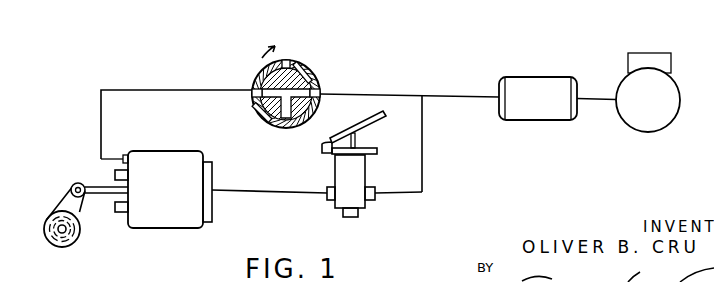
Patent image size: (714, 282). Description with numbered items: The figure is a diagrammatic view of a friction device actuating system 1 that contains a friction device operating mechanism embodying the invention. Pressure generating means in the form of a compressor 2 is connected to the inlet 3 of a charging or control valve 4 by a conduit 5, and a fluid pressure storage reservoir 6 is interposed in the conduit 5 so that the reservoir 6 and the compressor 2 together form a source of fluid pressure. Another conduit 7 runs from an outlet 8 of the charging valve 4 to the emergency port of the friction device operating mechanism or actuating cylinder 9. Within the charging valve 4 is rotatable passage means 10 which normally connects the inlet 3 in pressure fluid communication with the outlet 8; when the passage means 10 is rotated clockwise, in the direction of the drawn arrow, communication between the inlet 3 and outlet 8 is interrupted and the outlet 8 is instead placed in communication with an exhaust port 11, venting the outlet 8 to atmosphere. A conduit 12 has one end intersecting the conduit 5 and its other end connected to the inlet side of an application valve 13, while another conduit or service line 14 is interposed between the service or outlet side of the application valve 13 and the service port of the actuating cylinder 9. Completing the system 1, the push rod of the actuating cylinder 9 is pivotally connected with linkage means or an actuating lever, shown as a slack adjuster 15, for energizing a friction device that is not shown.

The friction device actuating system 1 is at (512, 64).
The compressor 2 is at (646, 132).
The inlet 3 is at (318, 91).
The charging valve 4 is at (305, 68).
The conduit 5 is at (388, 94).
The fluid pressure storage reservoir 6 is at (537, 121).
The conduit 7 is at (136, 90).
The outlet 8 is at (253, 89).
The actuating cylinder 9 is at (171, 196).
The rotatable passage means 10 is at (262, 104).
The exhaust port 11 is at (286, 58).
The conduit 12 is at (423, 148).
The application valve 13 is at (357, 187).
The service line 14 is at (266, 193).
The slack adjuster 15 is at (57, 211).